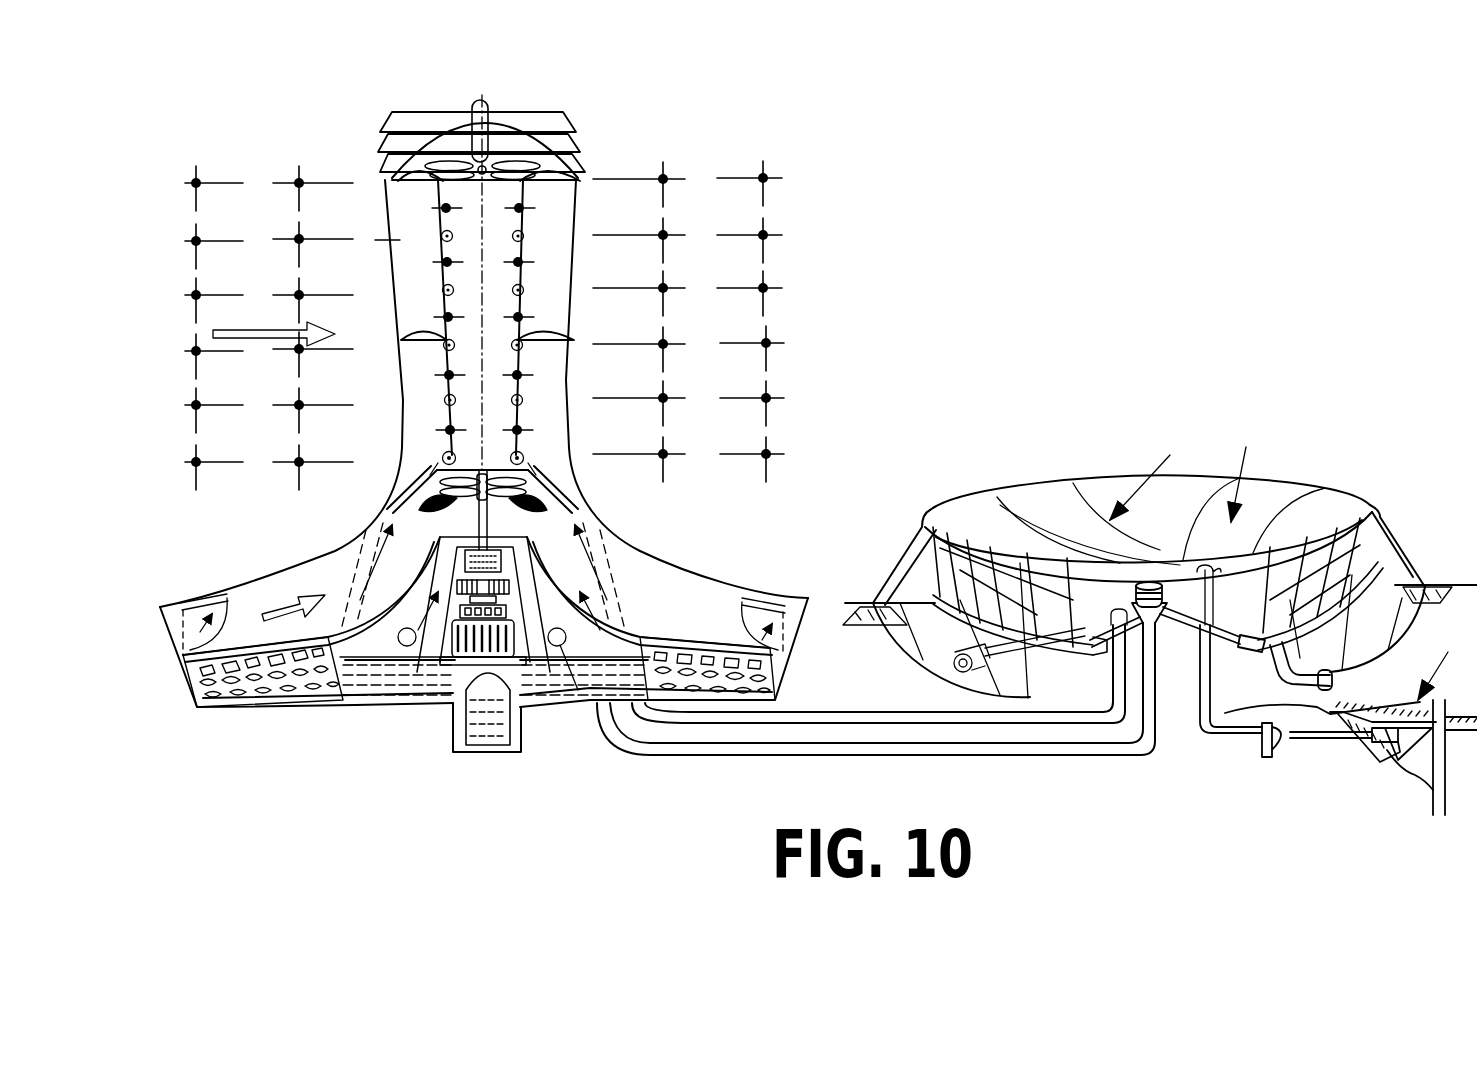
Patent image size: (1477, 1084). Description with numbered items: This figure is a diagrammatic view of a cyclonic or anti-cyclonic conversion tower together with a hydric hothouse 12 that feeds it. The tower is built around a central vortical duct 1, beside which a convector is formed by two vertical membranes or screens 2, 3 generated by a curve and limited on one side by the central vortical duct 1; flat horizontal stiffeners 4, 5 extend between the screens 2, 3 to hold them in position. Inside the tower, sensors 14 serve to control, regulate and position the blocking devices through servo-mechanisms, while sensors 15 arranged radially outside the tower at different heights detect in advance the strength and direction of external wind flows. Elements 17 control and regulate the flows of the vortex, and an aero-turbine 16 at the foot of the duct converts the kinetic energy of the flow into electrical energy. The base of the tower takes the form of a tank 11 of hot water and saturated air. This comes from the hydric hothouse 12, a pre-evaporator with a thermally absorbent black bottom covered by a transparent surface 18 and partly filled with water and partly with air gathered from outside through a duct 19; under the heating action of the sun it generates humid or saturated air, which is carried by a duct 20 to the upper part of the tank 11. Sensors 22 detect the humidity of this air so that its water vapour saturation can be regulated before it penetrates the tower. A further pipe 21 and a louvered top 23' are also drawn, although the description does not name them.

The central vortical duct 1 is at (500, 268).
The vertical membrane or screen 2 is at (420, 252).
The vertical membrane or screen 3 is at (545, 300).
The stiffener 4 is at (420, 180).
The stiffener 5 is at (553, 165).
The tank 11 is at (375, 670).
The hydric hothouse 12 is at (963, 502).
The sensors 14 is at (446, 208).
The sensors 15 is at (665, 288).
The aero-turbine 16 is at (470, 505).
The elements for controlling and regulating the flows of the vortex 17 is at (452, 457).
The transparent surface 18 is at (1055, 508).
The duct 19 is at (1322, 692).
The duct 20 is at (1135, 757).
The supply pipe 21 is at (680, 727).
The sensors 22 is at (590, 640).
The louvers 23' is at (432, 134).